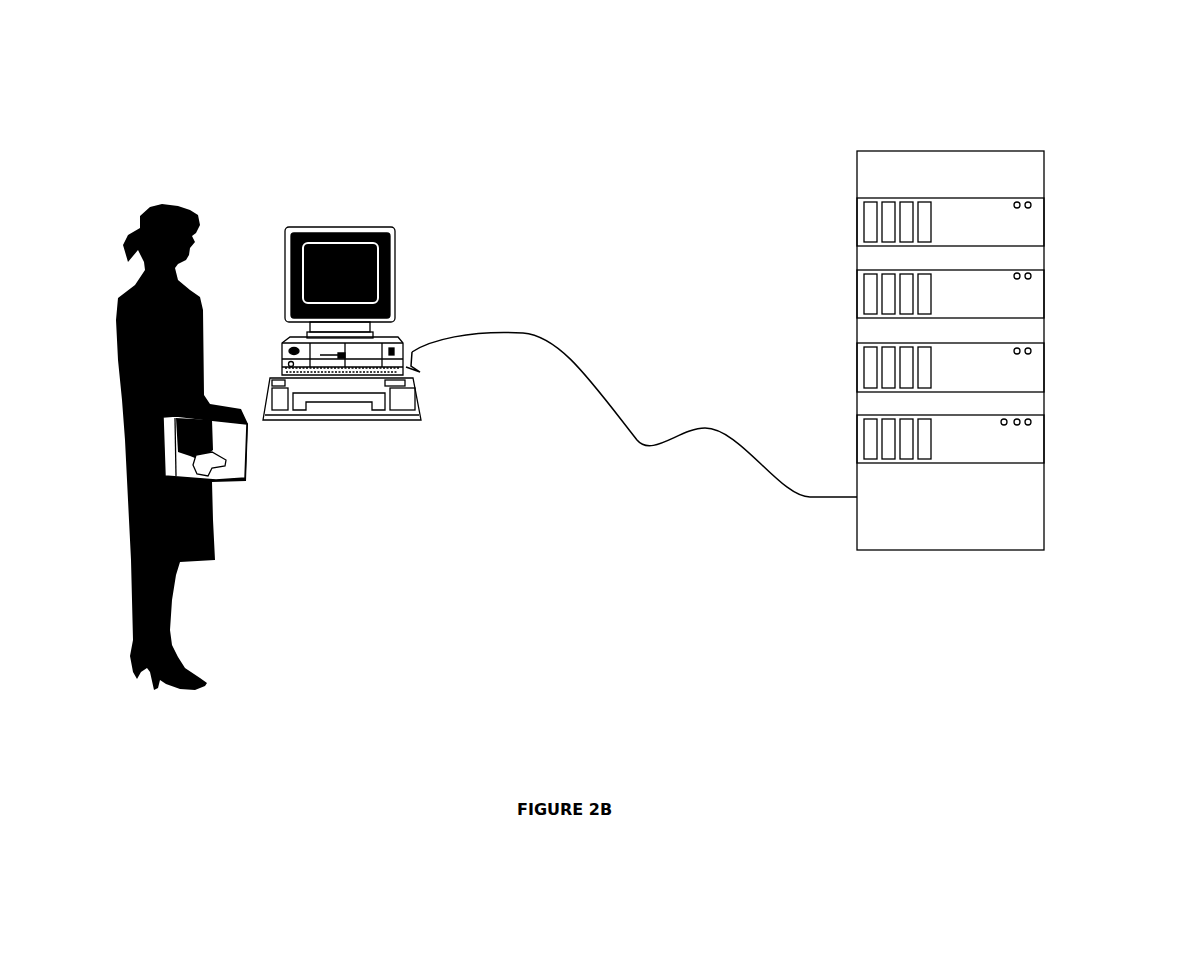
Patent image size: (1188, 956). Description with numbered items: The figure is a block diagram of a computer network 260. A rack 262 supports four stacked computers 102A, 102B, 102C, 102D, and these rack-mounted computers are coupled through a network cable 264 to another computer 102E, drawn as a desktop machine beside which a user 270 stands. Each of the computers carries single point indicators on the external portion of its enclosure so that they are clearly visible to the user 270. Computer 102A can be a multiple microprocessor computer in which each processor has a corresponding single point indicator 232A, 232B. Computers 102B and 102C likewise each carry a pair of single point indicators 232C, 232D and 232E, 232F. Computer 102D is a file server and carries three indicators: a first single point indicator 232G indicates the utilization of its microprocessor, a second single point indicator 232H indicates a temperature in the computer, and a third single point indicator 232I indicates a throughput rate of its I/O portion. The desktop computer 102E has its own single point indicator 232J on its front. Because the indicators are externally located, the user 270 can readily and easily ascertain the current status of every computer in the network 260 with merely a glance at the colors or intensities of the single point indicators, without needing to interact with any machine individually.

The computer network 260 is at (590, 82).
The rack 262 is at (950, 150).
The network cable 264 is at (577, 373).
The user 270 is at (116, 306).
The computer 102A is at (856, 240).
The computer 102B is at (856, 308).
The computer 102C is at (856, 384).
The computer 102D is at (856, 454).
The computer 102E is at (400, 351).
The single point indicator 232A is at (1033, 205).
The single point indicator 232B is at (1033, 205).
The single point indicator 232C is at (1033, 276).
The single point indicator 232D is at (1033, 276).
The single point indicator 232E is at (1033, 351).
The single point indicator 232F is at (1033, 351).
The first single point indicator 232G is at (1033, 422).
The second single point indicator 232H is at (1033, 422).
The third single point indicator 232I is at (1033, 422).
The single point indicator 232J is at (283, 365).